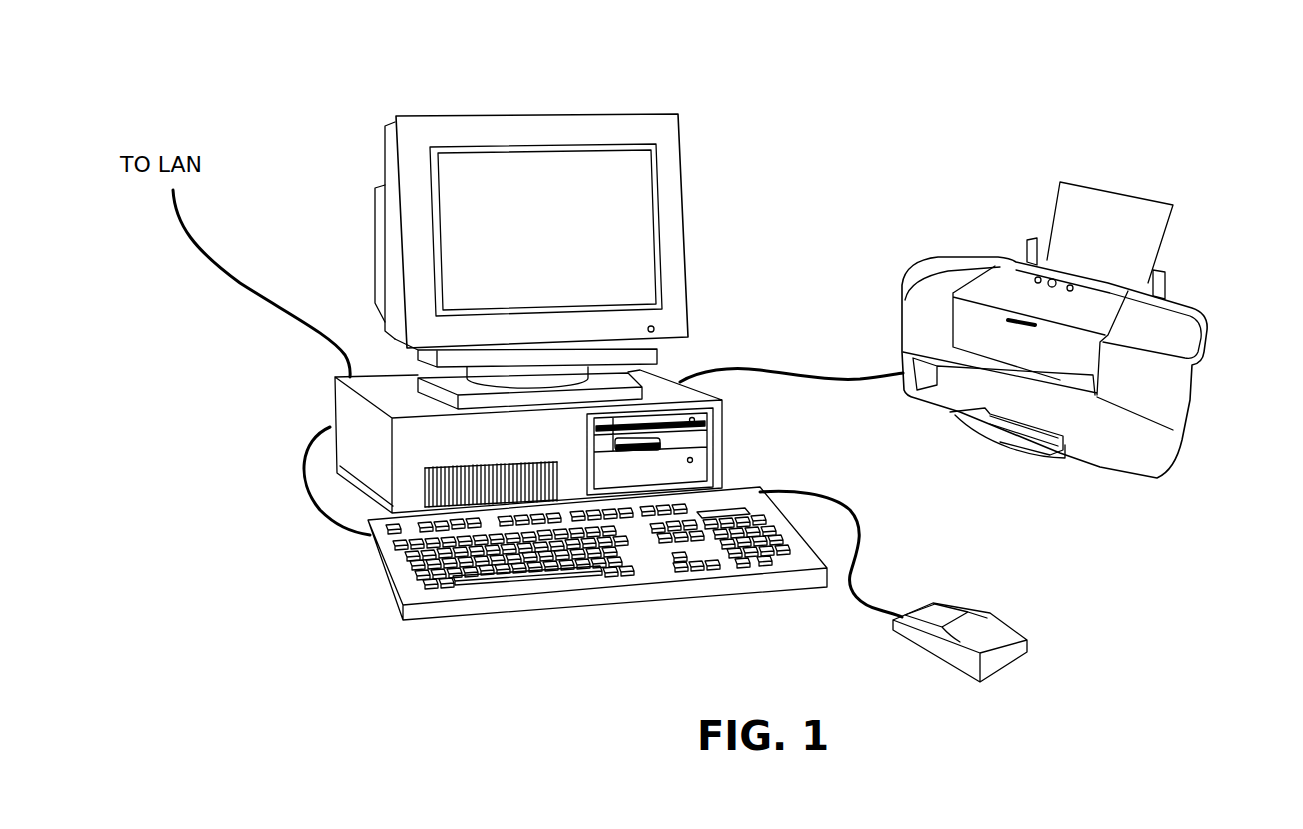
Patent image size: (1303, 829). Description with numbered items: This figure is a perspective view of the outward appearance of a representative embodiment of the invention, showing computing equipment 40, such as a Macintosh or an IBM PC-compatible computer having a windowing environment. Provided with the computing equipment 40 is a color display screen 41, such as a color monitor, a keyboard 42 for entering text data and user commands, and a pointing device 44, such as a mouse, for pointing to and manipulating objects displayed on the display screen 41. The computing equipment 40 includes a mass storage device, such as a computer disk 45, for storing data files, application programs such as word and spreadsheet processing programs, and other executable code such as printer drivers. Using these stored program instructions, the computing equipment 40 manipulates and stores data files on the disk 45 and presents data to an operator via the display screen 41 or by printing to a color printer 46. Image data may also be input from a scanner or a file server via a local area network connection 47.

The computing equipment 40 is at (685, 107).
The color display screen 41 is at (627, 282).
The keyboard 42 is at (473, 593).
The pointing device 44 is at (1005, 672).
The computer disk 45 is at (702, 465).
The color printer 46 is at (1180, 383).
The local area network connection 47 is at (210, 272).